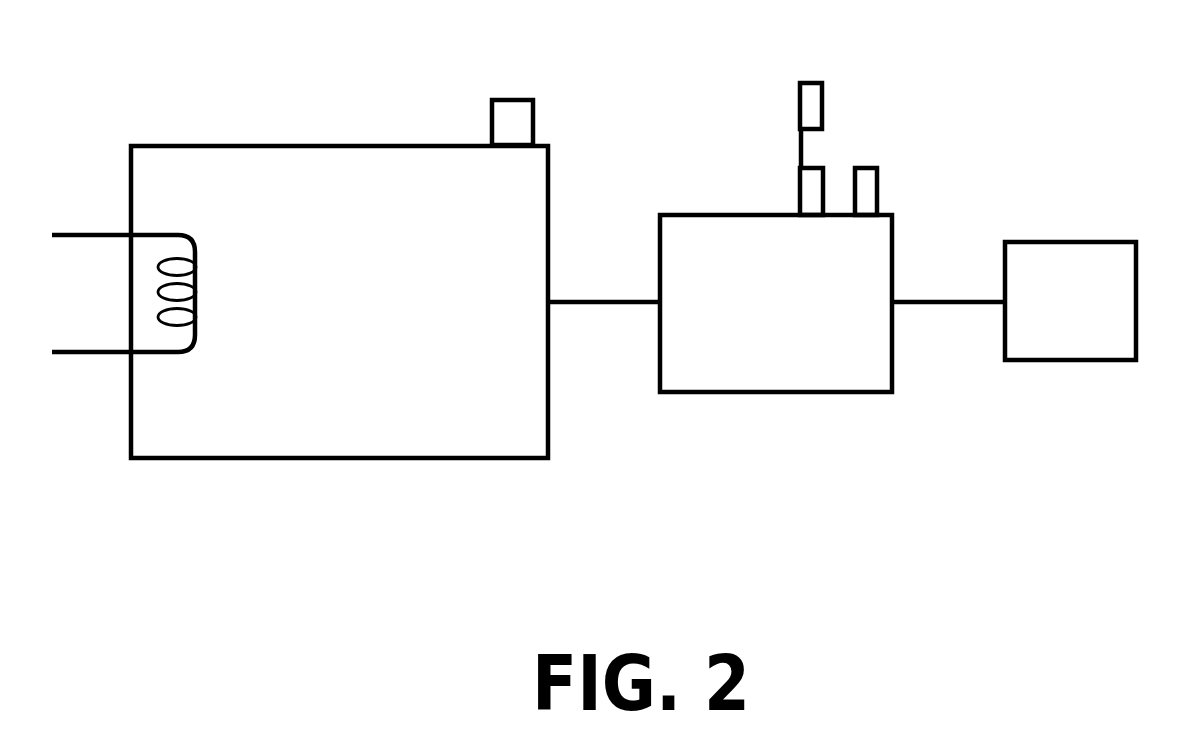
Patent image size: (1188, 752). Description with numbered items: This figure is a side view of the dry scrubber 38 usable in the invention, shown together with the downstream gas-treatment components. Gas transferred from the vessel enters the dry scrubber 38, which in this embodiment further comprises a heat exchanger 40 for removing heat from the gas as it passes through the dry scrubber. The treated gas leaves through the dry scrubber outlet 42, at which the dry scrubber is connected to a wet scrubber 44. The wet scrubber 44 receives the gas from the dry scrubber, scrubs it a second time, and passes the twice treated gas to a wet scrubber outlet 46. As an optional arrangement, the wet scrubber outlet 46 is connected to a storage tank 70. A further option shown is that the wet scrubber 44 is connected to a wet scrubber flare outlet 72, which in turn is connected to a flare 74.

The dry scrubber 38 is at (203, 145).
The heat exchanger 40 is at (98, 353).
The dry scrubber outlet 42 is at (514, 118).
The wet scrubber 44 is at (694, 228).
The wet scrubber outlet 46 is at (868, 190).
The storage tank 70 is at (1090, 258).
The wet scrubber flare outlet 72 is at (810, 190).
The flare 74 is at (808, 100).